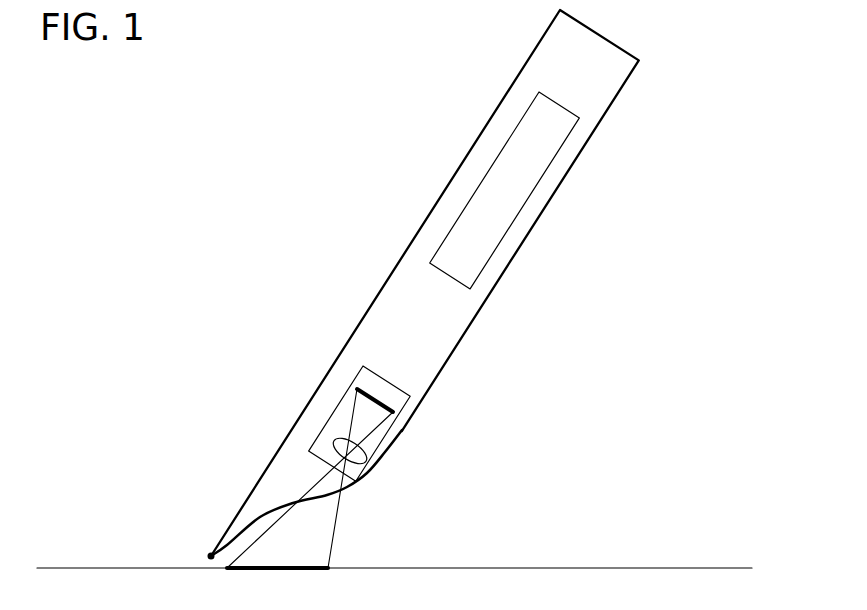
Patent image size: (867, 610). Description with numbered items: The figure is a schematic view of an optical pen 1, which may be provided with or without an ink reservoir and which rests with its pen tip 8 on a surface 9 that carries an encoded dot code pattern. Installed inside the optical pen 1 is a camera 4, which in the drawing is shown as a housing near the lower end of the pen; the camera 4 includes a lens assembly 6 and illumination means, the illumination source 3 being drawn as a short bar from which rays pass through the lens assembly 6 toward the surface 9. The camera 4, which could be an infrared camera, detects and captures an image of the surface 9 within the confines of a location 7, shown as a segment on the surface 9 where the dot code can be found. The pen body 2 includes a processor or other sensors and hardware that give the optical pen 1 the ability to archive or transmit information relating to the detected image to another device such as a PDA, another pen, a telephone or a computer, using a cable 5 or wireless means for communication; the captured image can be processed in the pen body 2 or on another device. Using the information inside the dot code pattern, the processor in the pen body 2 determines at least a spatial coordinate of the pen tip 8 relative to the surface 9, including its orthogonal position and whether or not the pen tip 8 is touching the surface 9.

The optical pen 1 is at (575, 90).
The pen body 2 is at (476, 233).
The light source 3 is at (372, 398).
The camera 4 is at (338, 425).
The cable 5 is at (378, 463).
The lens assembly 6 is at (333, 442).
The location 7 is at (288, 567).
The pen tip 8 is at (209, 552).
The surface 9 is at (577, 567).